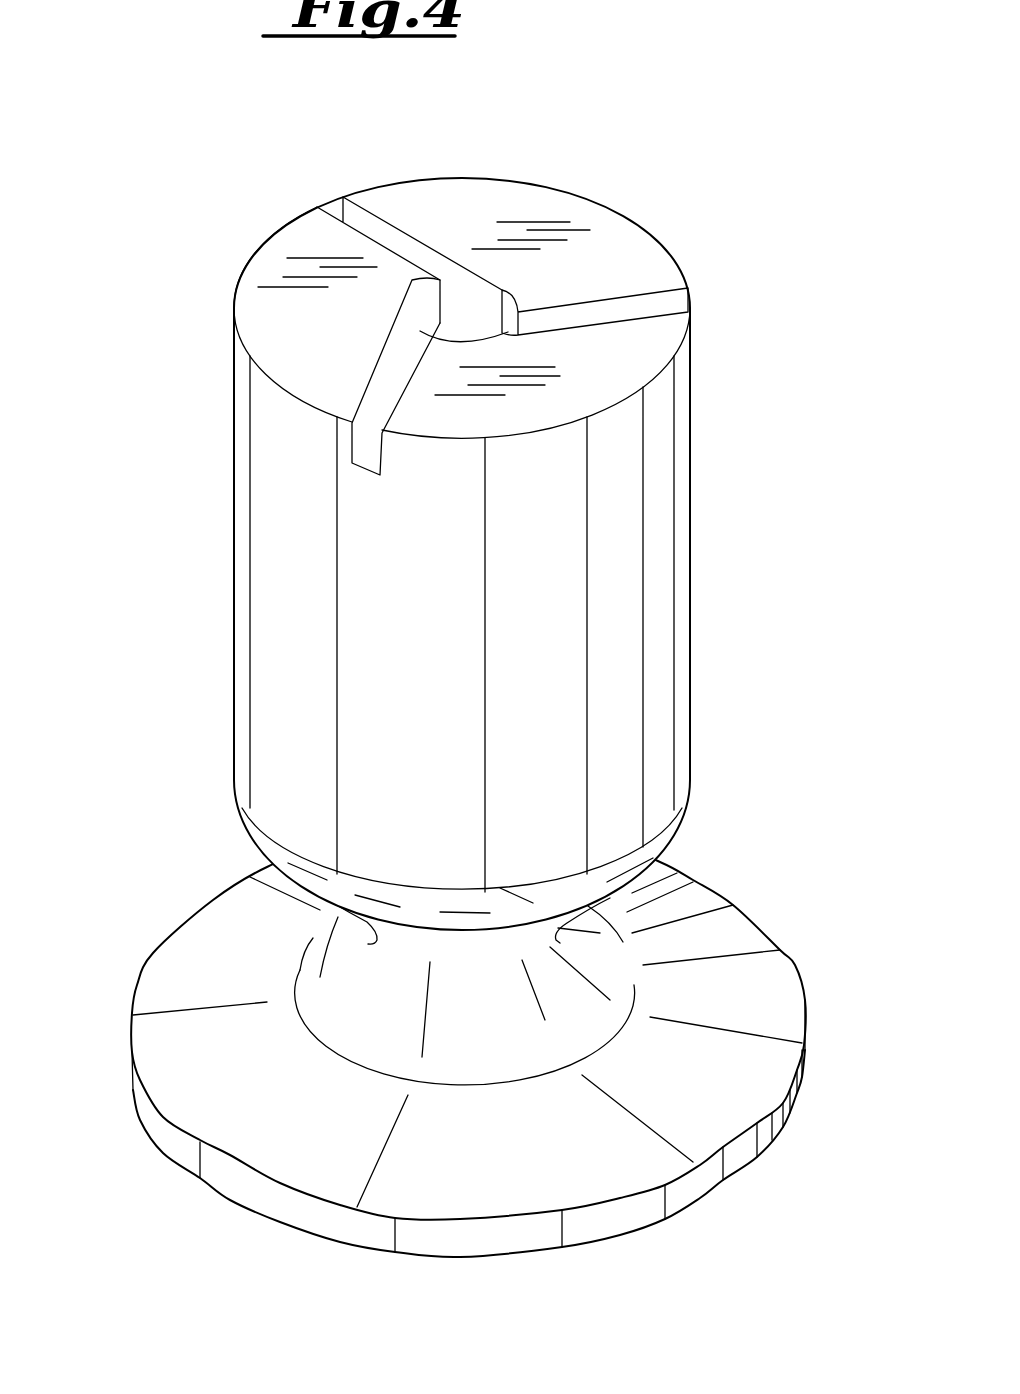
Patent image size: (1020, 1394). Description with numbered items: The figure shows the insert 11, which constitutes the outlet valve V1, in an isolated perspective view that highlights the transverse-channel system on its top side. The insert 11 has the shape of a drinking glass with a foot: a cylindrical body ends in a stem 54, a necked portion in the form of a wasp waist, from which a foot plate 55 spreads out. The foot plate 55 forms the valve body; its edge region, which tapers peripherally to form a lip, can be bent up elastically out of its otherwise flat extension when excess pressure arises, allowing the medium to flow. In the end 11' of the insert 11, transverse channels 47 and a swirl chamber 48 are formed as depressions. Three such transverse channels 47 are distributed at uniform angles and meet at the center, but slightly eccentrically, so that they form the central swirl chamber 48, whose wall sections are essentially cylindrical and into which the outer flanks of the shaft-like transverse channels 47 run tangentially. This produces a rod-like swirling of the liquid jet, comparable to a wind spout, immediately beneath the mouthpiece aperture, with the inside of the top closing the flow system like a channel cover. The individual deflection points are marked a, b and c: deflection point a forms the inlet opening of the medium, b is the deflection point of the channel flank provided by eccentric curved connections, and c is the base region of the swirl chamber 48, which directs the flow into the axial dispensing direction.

The insert 11 is at (525, 554).
The end of the insert 11' is at (277, 233).
The transverse channel 47 is at (390, 230).
The swirl chamber 48 is at (458, 322).
The stem 54 is at (398, 933).
The foot plate 55 is at (190, 970).
The deflection point a is at (366, 478).
The deflection point b is at (433, 307).
The deflection point c is at (480, 322).
The outlet valve V1 is at (735, 865).